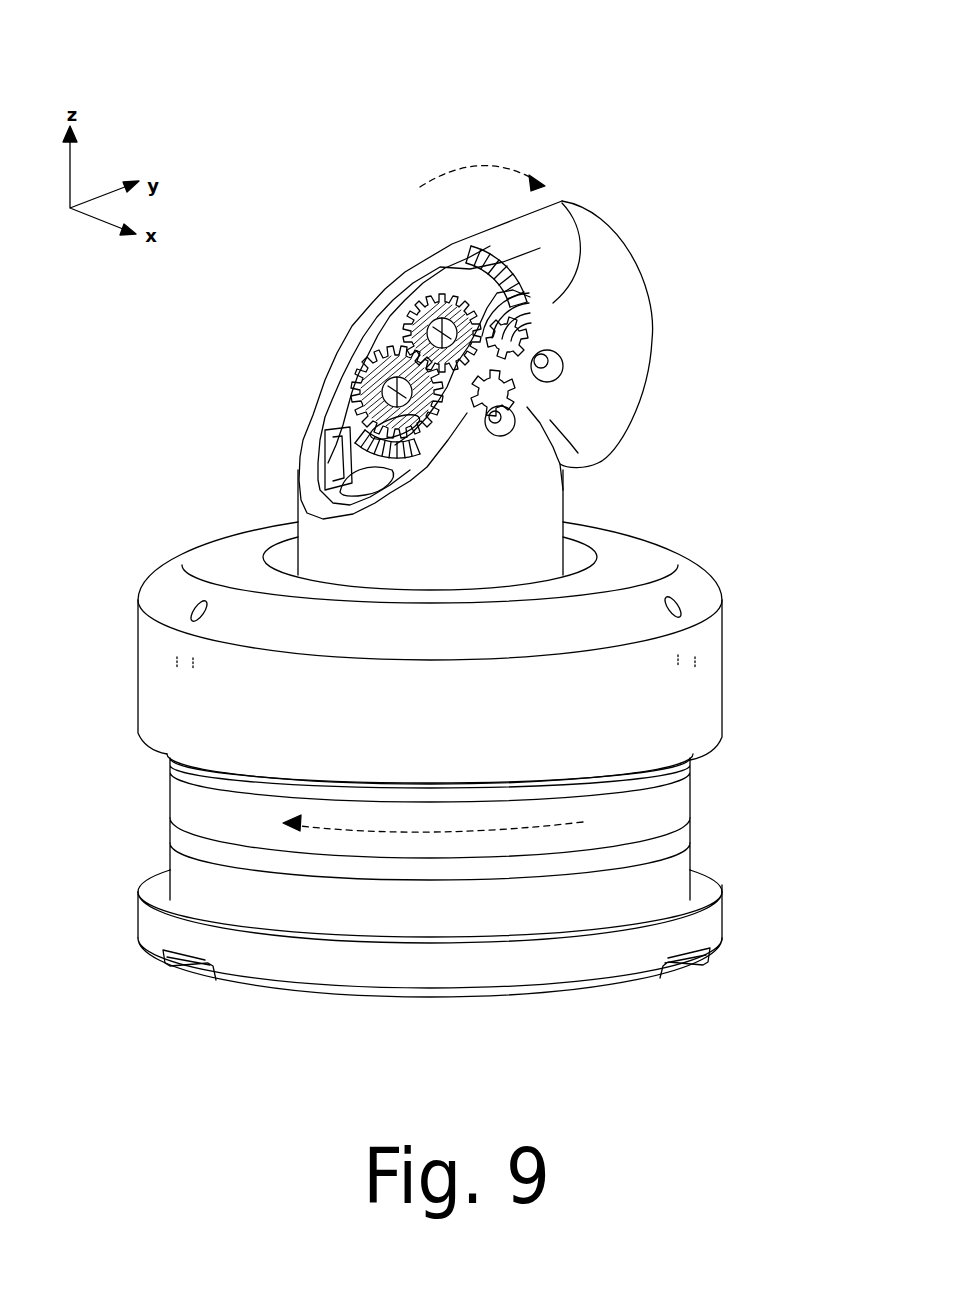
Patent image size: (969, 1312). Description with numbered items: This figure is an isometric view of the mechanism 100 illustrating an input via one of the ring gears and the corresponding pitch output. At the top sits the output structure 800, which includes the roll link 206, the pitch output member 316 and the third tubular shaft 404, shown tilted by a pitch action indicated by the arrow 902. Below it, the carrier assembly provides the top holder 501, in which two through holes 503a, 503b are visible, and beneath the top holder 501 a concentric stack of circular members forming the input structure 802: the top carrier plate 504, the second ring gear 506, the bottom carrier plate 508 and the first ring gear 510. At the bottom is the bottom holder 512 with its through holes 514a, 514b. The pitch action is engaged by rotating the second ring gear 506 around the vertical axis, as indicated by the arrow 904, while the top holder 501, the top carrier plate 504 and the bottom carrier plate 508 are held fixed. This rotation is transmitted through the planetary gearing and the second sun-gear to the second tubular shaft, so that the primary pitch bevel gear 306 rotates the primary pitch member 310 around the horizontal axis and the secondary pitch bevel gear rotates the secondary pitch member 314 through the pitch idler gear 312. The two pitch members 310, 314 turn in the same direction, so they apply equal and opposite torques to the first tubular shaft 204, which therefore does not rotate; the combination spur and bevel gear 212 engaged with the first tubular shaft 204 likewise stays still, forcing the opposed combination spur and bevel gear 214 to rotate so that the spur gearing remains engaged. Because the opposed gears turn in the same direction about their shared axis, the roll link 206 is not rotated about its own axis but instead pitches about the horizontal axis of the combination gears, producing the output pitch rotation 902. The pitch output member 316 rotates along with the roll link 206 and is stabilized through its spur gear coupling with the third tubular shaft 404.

The mechanism 100 is at (474, 533).
The pitch action 902 is at (465, 117).
The pitch output member 316 is at (533, 308).
The primary pitch member 310 is at (630, 333).
The output structure 800 is at (755, 187).
The roll link 206 is at (406, 349).
The combination spur and bevel gear 214 is at (372, 333).
The secondary pitch member 314 is at (330, 354).
The combination spur and bevel gear 212 is at (330, 383).
The first tubular shaft 204 is at (281, 421).
The pitch idler gear 312 is at (303, 435).
The primary pitch bevel gear 306 is at (306, 466).
The third tubular shaft 404 is at (507, 505).
The top holder 501 is at (466, 619).
The through hole 503a is at (135, 549).
The through hole 503b is at (737, 568).
The top carrier plate 504 is at (490, 761).
The second ring gear 506 is at (490, 798).
The bottom carrier plate 508 is at (490, 832).
The first ring gear 510 is at (490, 861).
The input structure 802 is at (790, 693).
The bottom holder 512 is at (474, 933).
The through hole 514a is at (135, 1008).
The through hole 514b is at (726, 1007).
The rotation of the second ring gear 904 is at (473, 833).